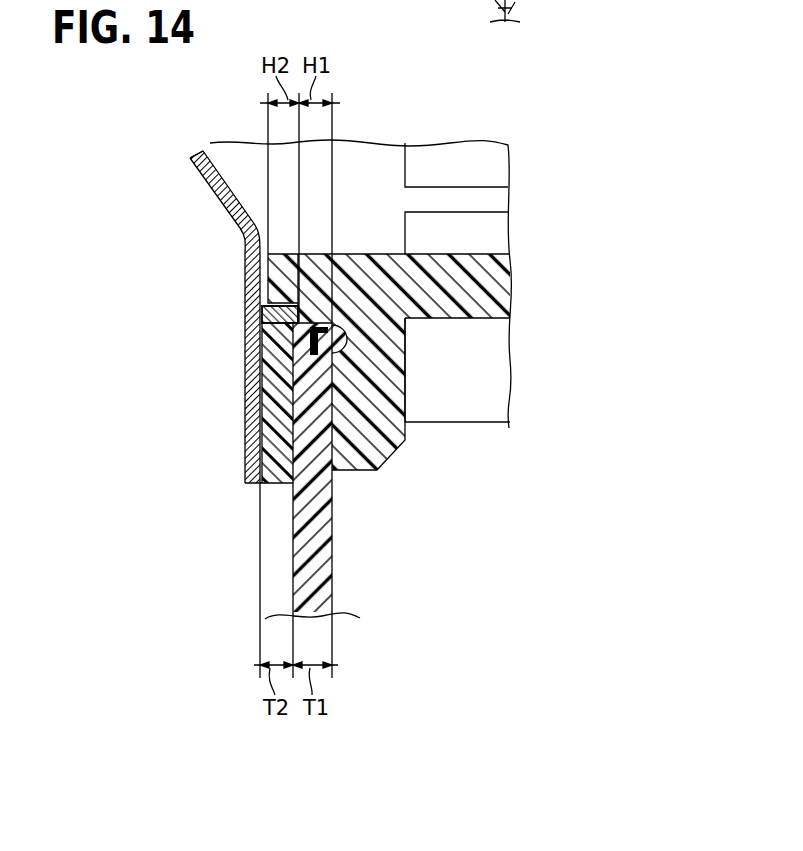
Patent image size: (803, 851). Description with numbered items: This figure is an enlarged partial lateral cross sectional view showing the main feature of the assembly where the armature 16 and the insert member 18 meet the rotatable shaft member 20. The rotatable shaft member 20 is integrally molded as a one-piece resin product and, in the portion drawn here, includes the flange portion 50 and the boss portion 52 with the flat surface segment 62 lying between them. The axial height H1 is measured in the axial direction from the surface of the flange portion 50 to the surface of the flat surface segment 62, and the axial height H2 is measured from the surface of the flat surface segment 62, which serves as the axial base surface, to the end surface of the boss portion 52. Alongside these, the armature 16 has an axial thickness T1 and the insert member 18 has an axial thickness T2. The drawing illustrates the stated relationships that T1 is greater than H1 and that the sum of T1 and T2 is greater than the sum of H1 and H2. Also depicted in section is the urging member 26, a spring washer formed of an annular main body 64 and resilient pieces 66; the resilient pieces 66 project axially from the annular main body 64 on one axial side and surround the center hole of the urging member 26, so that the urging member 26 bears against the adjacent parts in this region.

The armature 16 is at (333, 560).
The insert member 18 is at (278, 484).
The rotatable shaft member 20 is at (465, 320).
The urging member 26 is at (208, 317).
The flange portion 50 is at (366, 470).
The boss portion 52 is at (268, 280).
The flat surface segment 62 is at (262, 312).
The annular main body 64 is at (259, 443).
The resilient pieces 66 is at (215, 192).